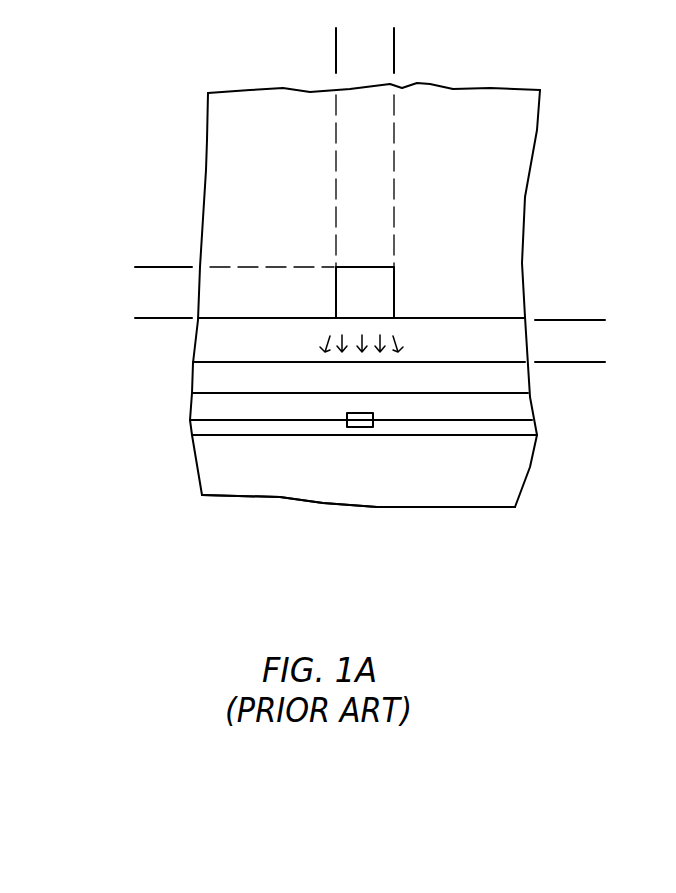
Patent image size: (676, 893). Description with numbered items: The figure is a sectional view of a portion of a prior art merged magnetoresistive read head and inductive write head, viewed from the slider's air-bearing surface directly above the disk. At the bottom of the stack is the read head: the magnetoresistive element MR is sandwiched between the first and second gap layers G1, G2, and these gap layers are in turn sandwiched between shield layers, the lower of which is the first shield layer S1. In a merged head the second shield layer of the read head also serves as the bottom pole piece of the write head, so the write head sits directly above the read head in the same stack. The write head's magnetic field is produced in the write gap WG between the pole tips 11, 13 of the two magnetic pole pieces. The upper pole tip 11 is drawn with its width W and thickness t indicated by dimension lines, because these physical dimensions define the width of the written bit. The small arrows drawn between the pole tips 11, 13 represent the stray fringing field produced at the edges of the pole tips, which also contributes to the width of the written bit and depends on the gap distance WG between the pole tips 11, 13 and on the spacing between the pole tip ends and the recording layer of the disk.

The write head pole tip 11 is at (368, 290).
The write head pole tip 13 is at (393, 380).
The second gap layer G2 is at (203, 403).
The first gap layer G1 is at (210, 427).
The magnetoresistive element MR is at (355, 428).
The first shield layer S1 is at (493, 472).
The width of write head pole tip W is at (453, 51).
The thickness of write head pole tip t is at (162, 203).
The write gap WG is at (571, 253).